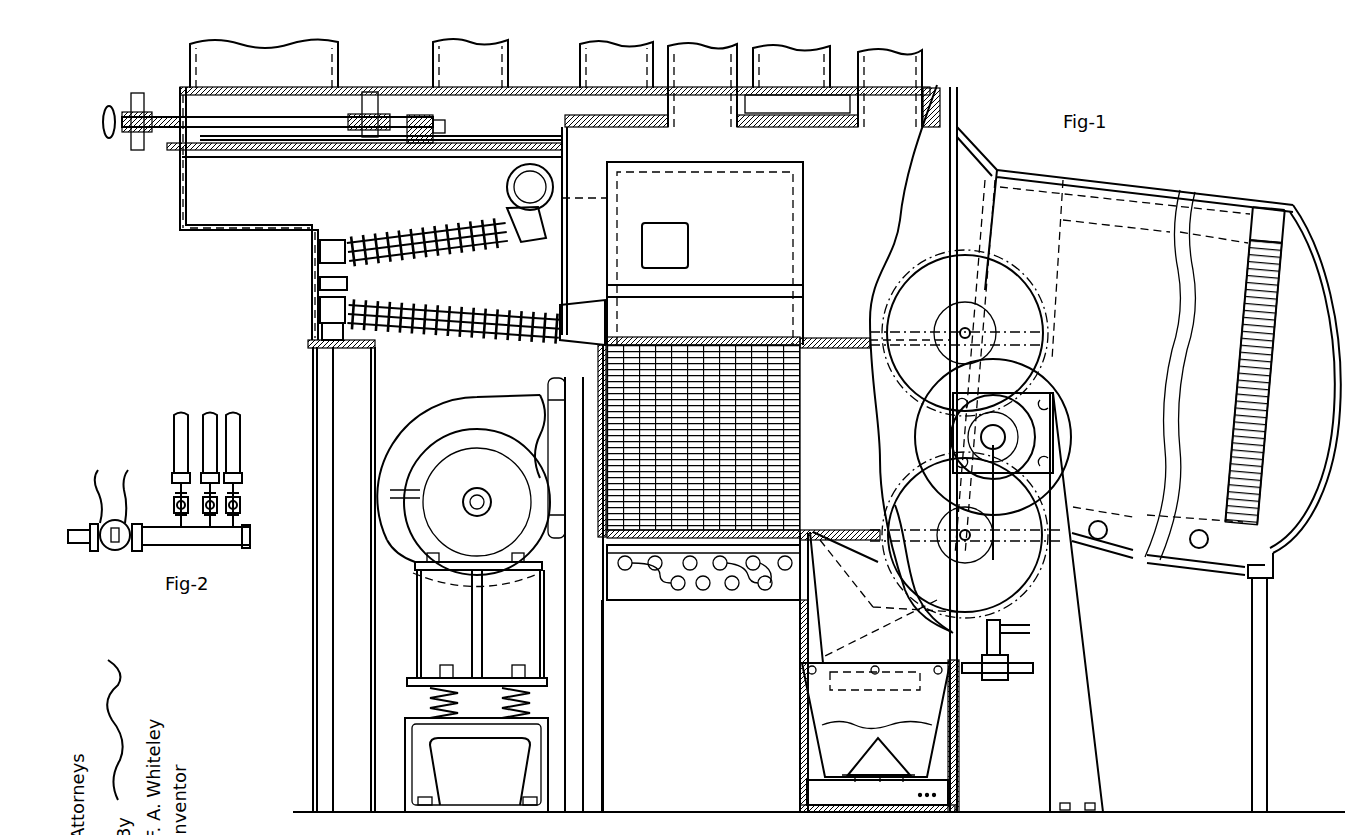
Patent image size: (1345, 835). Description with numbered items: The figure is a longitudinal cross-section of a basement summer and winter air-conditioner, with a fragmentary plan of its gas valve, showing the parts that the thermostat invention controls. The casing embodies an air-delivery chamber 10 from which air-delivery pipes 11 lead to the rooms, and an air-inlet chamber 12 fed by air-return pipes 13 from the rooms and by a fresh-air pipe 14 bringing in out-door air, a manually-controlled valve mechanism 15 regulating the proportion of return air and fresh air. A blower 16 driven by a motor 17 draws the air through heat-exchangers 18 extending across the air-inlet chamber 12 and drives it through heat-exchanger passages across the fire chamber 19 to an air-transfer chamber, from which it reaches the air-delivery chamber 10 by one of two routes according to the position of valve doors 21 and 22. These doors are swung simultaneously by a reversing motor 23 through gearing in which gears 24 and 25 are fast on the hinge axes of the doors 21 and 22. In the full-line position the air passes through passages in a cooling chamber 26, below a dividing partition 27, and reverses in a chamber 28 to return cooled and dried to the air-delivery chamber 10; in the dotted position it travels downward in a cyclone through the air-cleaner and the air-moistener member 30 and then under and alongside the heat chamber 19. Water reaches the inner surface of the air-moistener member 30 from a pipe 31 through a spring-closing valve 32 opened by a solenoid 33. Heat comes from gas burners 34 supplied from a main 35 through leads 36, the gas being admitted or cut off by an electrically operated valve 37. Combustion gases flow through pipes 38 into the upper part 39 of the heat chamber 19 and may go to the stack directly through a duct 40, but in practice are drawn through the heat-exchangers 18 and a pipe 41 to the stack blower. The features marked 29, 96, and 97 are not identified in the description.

In FIG. 1, the air-delivery chamber 10 is at (762, 143).
In FIG. 1, the air-delivery pipes 11 is at (725, 55).
In FIG. 1, the air-inlet chamber 12 is at (300, 200).
In FIG. 1, the air-return pipes 13 is at (580, 55).
In FIG. 1, the fresh-air pipe 14 is at (340, 48).
In FIG. 1, the manually-controlled valve mechanism 15 is at (315, 153).
In FIG. 1, the blower 16 is at (452, 404).
In FIG. 1, the motor 17 is at (458, 490).
In FIG. 1, the heat-exchangers 18 is at (484, 314).
In FIG. 1, the fire chamber 19 is at (690, 370).
In FIG. 1, the valve door 21 is at (832, 532).
In FIG. 1, the valve door 22 is at (982, 214).
In FIG. 1, the reversing motor 23 is at (1035, 382).
In FIG. 1, the gear 24 is at (903, 490).
In FIG. 1, the gear 25 is at (912, 382).
In FIG. 1, the cooling chamber 26 is at (1142, 190).
In FIG. 1, the dividing partition 27 is at (1265, 381).
In FIG. 1, the chamber 28 is at (1282, 490).
In FIG. 1, the partition 29 is at (830, 618).
In FIG. 1, the air-moistener member 30 is at (825, 705).
In FIG. 1, the pipe 31 is at (970, 678).
In FIG. 1, the spring-closing valve 32 is at (1008, 662).
In FIG. 1, the solenoid 33 is at (995, 622).
In FIG. 1, the gas burners 34 is at (656, 600).
In FIG. 2, the main 35 is at (80, 540).
In FIG. 1, the leads 36 is at (720, 596).
In FIG. 2, the leads 36 is at (233, 410).
In FIG. 2, the electrically operated valve 37 is at (128, 520).
In FIG. 1, the pipes 38 is at (783, 360).
In FIG. 1, the upper part of heat chamber 39 is at (780, 190).
In FIG. 1, the duct 40 is at (667, 233).
In FIG. 1, the pipe 41 is at (520, 190).
In FIG. 1, the hole 96 is at (1199, 550).
In FIG. 1, the hole 97 is at (1100, 540).